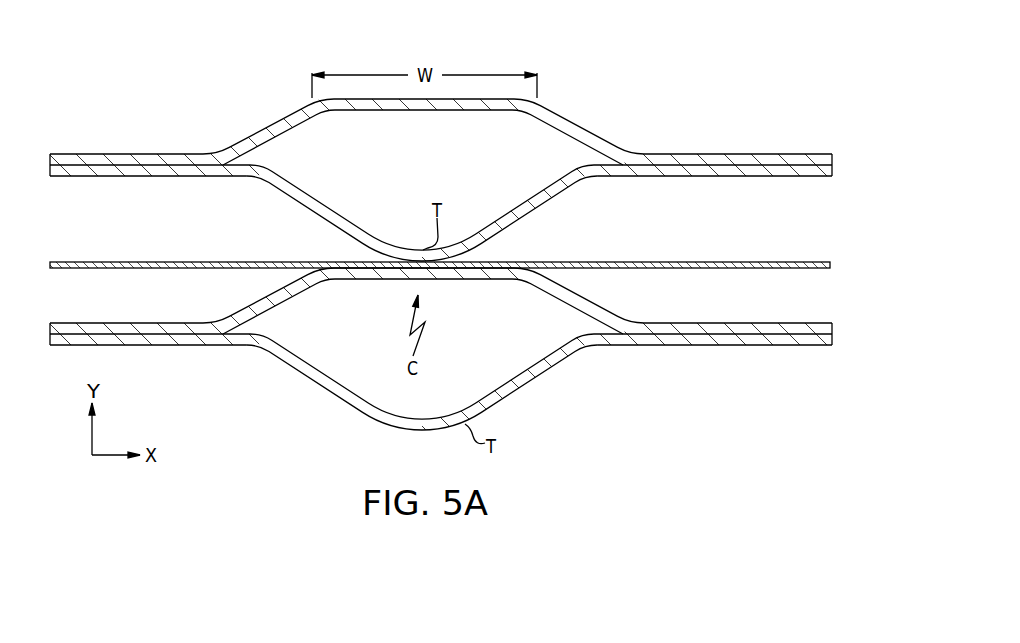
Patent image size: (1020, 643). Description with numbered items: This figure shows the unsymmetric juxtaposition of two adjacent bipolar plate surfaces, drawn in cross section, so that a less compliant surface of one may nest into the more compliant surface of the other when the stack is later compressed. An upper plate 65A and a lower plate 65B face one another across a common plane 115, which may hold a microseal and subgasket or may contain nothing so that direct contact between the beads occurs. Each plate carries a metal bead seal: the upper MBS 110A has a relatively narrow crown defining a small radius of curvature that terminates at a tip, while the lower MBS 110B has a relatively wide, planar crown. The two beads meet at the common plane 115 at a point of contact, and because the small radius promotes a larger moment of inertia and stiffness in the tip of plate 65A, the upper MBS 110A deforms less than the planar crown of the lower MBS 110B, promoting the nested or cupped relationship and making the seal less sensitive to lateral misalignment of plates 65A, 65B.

The plate 65A is at (510, 170).
The plate 65B is at (510, 359).
The upper MBS 110A is at (535, 207).
The lower MBS 110B is at (592, 300).
The common plane 115 is at (785, 262).